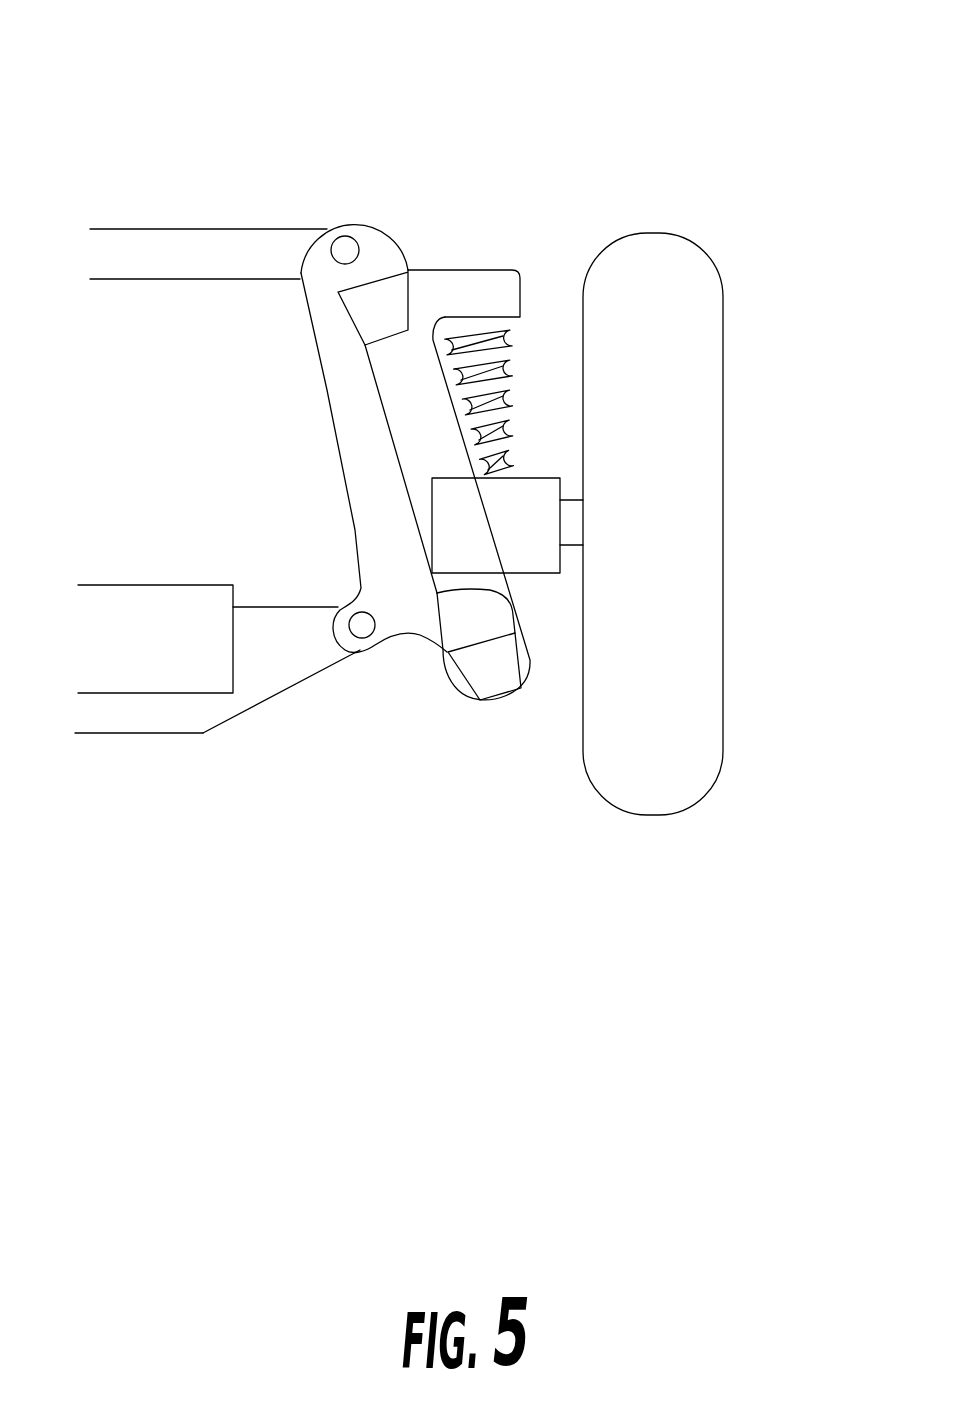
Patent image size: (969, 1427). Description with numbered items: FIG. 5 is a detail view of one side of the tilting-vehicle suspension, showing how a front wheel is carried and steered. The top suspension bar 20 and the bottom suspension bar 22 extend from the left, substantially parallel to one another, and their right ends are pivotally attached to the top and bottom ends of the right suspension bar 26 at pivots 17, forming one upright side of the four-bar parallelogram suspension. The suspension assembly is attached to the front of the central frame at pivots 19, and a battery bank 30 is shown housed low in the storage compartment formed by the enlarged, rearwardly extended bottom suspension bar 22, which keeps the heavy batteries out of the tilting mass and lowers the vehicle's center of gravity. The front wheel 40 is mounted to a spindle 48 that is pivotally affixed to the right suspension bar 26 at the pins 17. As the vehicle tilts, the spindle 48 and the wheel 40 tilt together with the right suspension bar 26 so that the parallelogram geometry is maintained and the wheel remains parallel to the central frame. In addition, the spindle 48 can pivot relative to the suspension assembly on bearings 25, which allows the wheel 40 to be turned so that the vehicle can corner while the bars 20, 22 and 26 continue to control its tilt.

The pivots 17 is at (345, 250).
The pivots 19 is at (365, 630).
The top suspension bar 20 is at (220, 253).
The bottom suspension bar 22 is at (203, 733).
The bearings 25 is at (485, 672).
The right suspension bar 26 is at (345, 420).
The battery banks 30 is at (87, 585).
The front wheel 40 is at (693, 400).
The spindle 48 is at (458, 245).